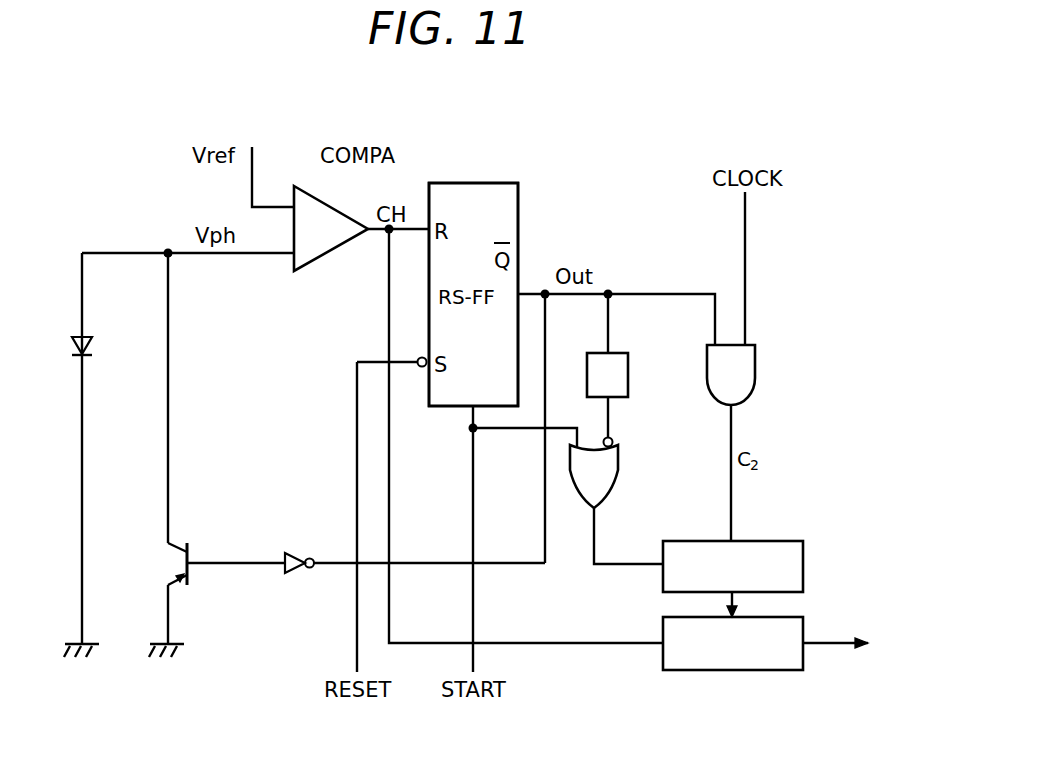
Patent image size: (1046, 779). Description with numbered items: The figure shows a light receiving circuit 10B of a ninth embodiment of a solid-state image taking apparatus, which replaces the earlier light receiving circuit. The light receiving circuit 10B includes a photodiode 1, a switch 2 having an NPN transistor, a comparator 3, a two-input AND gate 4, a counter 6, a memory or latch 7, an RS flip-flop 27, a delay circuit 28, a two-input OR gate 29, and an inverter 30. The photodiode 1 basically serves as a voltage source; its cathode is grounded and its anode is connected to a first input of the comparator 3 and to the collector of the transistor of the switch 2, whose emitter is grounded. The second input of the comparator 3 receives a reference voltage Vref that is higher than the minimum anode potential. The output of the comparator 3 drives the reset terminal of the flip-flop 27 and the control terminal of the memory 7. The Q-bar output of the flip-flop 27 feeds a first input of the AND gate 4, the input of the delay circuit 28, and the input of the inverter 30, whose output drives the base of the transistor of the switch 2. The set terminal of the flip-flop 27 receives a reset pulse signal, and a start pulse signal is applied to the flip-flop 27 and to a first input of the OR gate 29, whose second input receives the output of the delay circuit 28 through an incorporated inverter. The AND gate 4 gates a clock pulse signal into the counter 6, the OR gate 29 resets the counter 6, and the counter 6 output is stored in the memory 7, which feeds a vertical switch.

The light receiving circuit 10B is at (470, 146).
The photodiode 1 is at (93, 345).
The switch 2 is at (193, 546).
The comparator 3 is at (342, 205).
The RS flip-flop 27 is at (484, 181).
The delay circuit 28 is at (630, 374).
The two-input OR gate 29 is at (620, 470).
The two-input AND gate 4 is at (758, 364).
The inverter 30 is at (290, 553).
The counter 6 is at (810, 561).
The memory or latch 7 is at (814, 635).